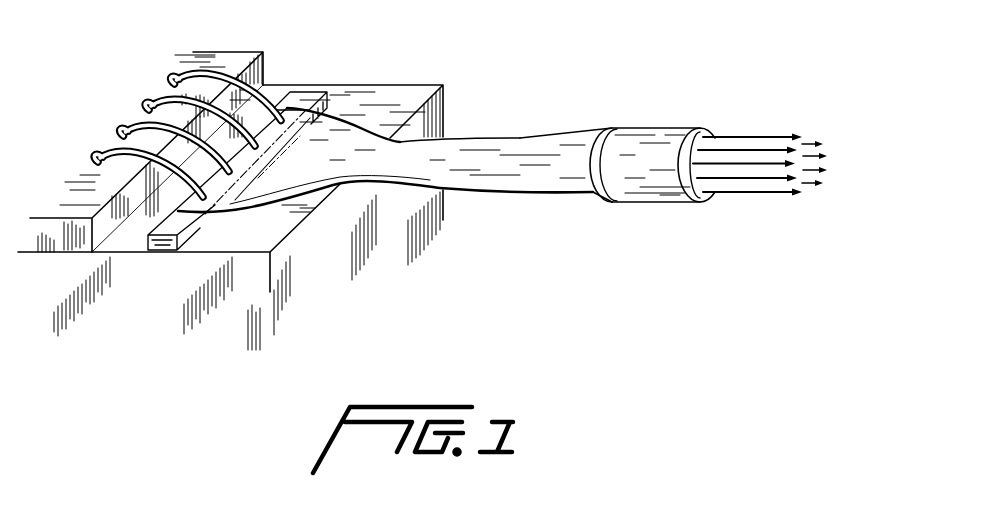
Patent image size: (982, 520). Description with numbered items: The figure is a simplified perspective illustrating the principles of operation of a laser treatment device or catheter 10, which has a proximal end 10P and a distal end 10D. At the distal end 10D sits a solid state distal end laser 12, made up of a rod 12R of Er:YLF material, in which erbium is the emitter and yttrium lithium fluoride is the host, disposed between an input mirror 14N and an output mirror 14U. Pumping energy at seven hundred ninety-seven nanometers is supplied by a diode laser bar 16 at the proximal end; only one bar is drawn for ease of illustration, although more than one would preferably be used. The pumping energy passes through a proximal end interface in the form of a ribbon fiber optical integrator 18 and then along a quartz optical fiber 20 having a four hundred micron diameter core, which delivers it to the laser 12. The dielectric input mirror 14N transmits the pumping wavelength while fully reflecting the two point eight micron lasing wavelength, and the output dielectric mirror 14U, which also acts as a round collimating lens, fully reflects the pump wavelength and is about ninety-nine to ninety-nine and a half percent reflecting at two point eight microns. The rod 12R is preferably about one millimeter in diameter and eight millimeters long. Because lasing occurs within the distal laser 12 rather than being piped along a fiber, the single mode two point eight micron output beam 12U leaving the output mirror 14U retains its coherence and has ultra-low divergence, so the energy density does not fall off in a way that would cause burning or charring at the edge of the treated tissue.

The catheter 10 is at (742, 312).
The proximal end 10P is at (478, 136).
The distal end 10D is at (677, 128).
The solid state distal end laser 12 is at (649, 202).
The rod 12R is at (642, 128).
The output beam 12U is at (797, 137).
The input mirror 14N is at (597, 200).
The output mirror 14U is at (712, 203).
The diode laser bar 16 is at (162, 251).
The ribbon fiber optical integrator 18 is at (390, 138).
The quartz optical fiber 20 is at (538, 137).